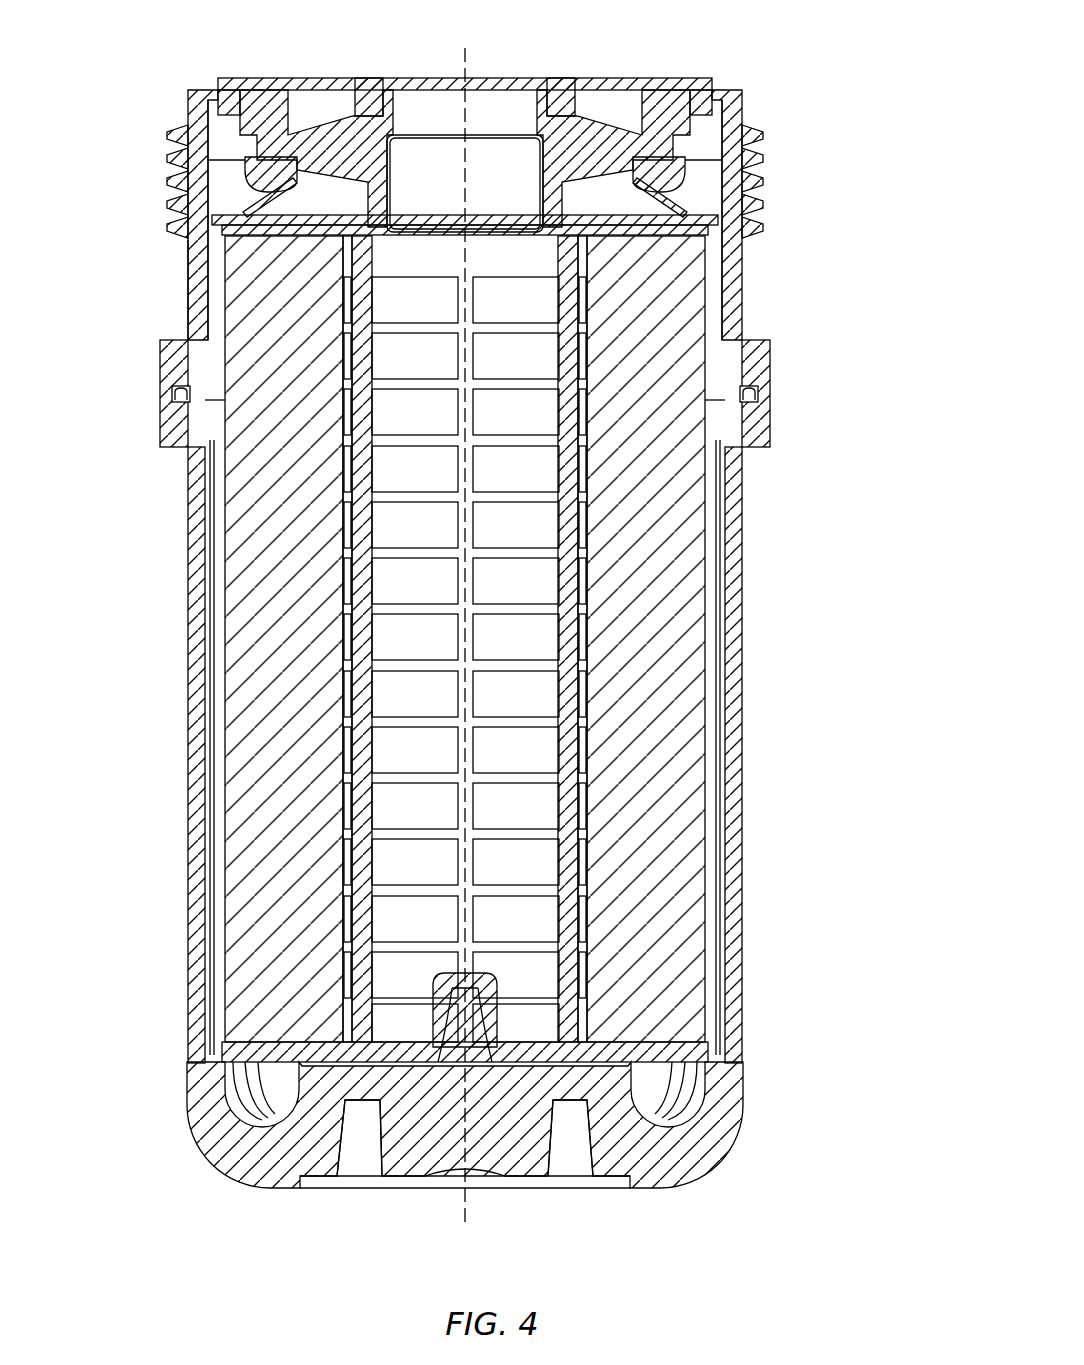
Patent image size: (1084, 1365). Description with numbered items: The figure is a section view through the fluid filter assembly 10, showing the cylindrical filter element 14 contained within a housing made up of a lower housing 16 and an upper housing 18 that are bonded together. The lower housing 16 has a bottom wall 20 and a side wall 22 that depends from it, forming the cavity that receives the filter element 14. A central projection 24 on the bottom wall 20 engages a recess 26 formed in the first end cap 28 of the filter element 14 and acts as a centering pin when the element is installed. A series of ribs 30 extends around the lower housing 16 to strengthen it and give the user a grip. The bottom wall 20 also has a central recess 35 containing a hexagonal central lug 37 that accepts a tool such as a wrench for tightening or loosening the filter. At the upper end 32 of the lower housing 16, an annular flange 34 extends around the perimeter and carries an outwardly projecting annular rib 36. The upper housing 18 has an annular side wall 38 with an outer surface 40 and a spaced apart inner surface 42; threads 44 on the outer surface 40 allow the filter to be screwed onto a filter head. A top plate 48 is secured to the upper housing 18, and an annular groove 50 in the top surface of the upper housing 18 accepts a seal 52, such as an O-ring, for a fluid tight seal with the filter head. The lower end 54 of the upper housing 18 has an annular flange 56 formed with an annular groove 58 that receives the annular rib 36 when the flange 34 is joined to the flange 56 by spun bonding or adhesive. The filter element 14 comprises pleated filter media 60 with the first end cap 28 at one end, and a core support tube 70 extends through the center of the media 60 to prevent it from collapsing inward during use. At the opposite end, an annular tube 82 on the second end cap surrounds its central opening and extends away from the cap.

The fluid filter assembly 10 is at (842, 168).
The filter element 14 is at (718, 667).
The lower housing 16 is at (750, 572).
The upper housing 18 is at (752, 282).
The bottom wall 20 is at (570, 1087).
The side wall 22 is at (190, 705).
The central projection 24 is at (583, 1020).
The recess 26 is at (452, 992).
The first end cap 28 is at (400, 1053).
The ribs 30 is at (738, 1118).
The upper end 32 is at (784, 440).
The annular flange 34 is at (755, 425).
The central recess 35 is at (561, 1160).
The annular rib 36 is at (762, 396).
The central lug 37 is at (400, 1167).
The annular side wall 38 is at (203, 280).
The outer surface 40 is at (182, 318).
The inner surface 42 is at (715, 328).
The threads 44 is at (185, 207).
The top plate 48 is at (320, 135).
The annular groove 50 is at (217, 105).
The seal 52 is at (232, 90).
The lower end 54 is at (160, 353).
The annular flange 56 is at (180, 396).
The annular groove 58 is at (198, 400).
The pleated filter media 60 is at (250, 790).
The core support tube 70 is at (572, 820).
The annular tube 82 is at (593, 137).